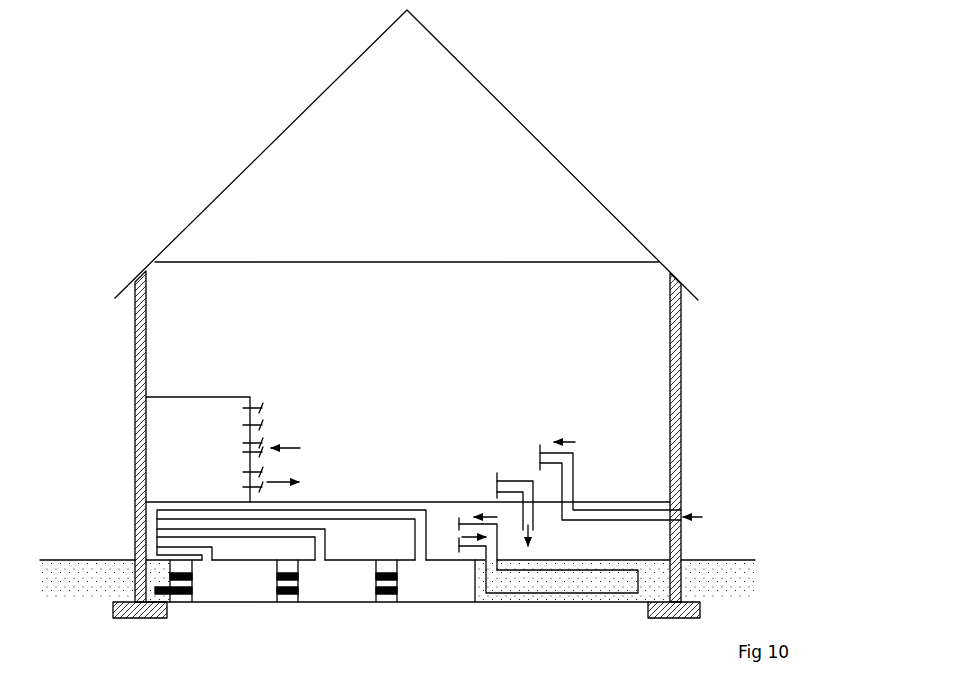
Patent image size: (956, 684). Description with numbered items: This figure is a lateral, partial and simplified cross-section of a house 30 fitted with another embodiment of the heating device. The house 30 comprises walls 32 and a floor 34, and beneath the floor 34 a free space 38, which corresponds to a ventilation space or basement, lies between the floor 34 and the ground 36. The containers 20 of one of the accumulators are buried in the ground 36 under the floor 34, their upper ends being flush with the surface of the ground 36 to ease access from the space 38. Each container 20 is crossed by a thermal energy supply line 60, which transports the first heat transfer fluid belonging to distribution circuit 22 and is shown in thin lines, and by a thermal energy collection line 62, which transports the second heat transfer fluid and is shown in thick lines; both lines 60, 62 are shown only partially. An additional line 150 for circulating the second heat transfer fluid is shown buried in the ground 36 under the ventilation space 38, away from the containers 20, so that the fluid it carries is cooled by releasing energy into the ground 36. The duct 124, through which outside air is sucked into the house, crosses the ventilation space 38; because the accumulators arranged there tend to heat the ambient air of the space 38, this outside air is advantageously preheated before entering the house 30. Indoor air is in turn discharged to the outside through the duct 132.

The house 30 is at (692, 370).
The walls 32 is at (676, 404).
The floor 34 is at (635, 502).
The duct 124 is at (682, 527).
The free space 38 is at (648, 548).
The distribution circuit 22 is at (156, 528).
The ground 36 is at (153, 577).
The thermal energy collection line 62 is at (180, 597).
The thermal energy supply line 60 is at (220, 562).
The containers 20 is at (238, 593).
The duct 132 is at (545, 517).
The additional line 150 is at (597, 577).